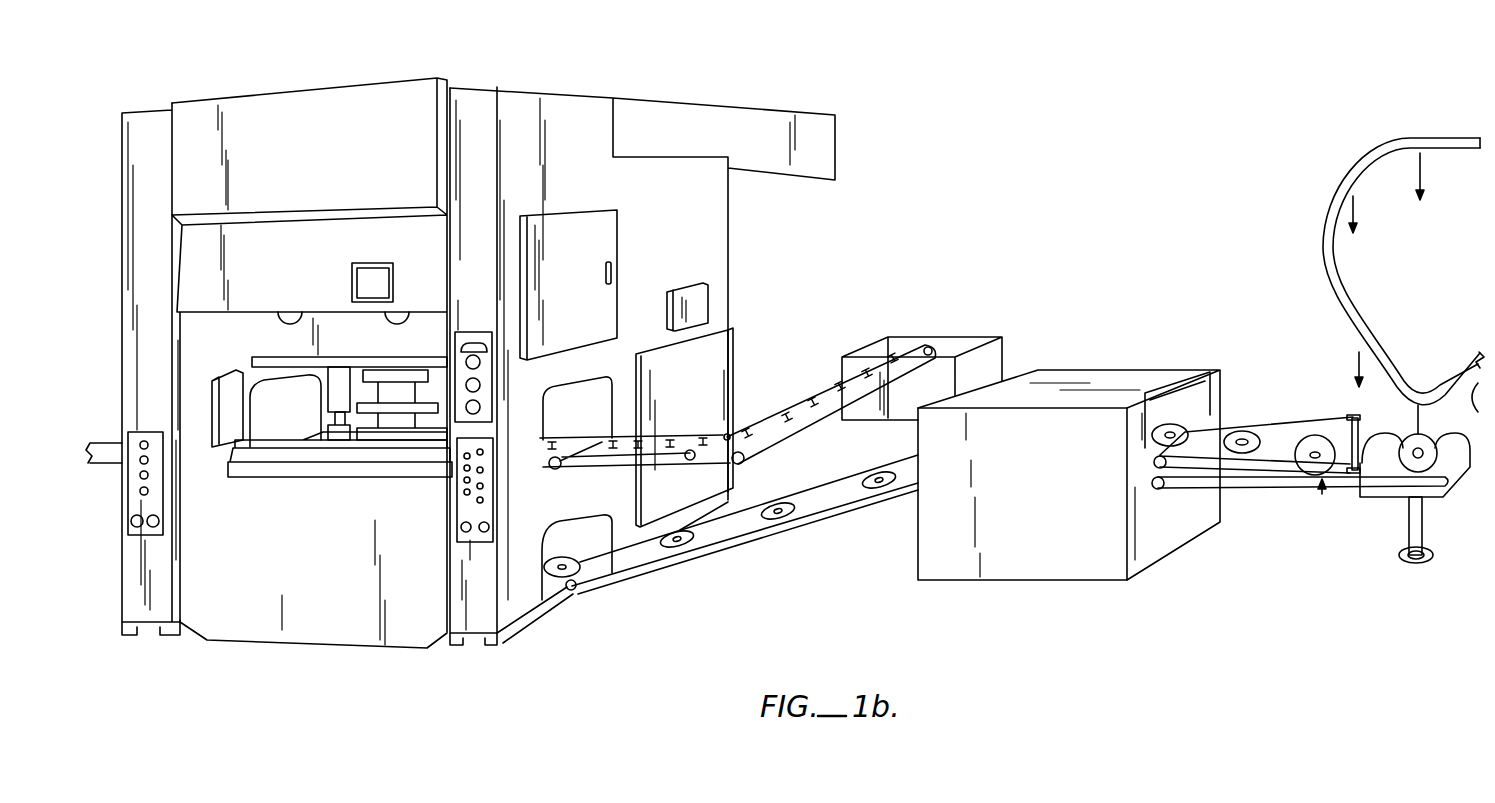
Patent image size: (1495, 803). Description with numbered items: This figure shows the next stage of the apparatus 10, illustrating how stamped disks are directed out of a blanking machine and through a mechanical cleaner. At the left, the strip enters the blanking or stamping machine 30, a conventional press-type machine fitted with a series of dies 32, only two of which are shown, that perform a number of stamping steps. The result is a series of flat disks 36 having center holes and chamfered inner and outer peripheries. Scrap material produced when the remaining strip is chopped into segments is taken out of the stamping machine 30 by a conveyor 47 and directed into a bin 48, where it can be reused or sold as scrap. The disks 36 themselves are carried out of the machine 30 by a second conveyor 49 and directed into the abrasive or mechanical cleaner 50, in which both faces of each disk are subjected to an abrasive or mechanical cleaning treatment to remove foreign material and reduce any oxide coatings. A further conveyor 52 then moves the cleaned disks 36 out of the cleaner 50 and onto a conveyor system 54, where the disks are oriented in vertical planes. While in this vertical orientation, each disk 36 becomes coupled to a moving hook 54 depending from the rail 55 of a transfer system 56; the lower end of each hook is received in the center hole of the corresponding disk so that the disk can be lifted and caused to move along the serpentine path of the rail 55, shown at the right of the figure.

The apparatus 10 is at (940, 84).
The blanking or stamping machine 30 is at (543, 90).
The dies 32 is at (342, 428).
The disk 36 is at (565, 558).
The conveyor 47 is at (687, 432).
The bin 48 is at (968, 335).
The conveyor 49 is at (713, 540).
The abrasive or mechanical cleaner 50 is at (1052, 582).
The conveyor 52 is at (1280, 433).
The conveyor system 54 is at (1422, 187).
The rail 55 is at (1353, 323).
The transfer system 56 is at (1346, 290).